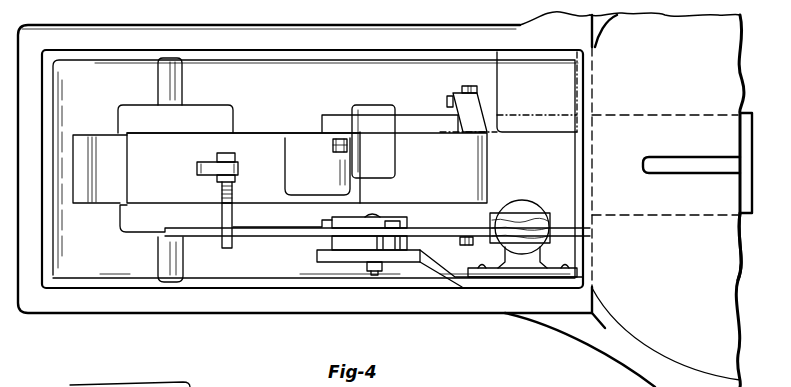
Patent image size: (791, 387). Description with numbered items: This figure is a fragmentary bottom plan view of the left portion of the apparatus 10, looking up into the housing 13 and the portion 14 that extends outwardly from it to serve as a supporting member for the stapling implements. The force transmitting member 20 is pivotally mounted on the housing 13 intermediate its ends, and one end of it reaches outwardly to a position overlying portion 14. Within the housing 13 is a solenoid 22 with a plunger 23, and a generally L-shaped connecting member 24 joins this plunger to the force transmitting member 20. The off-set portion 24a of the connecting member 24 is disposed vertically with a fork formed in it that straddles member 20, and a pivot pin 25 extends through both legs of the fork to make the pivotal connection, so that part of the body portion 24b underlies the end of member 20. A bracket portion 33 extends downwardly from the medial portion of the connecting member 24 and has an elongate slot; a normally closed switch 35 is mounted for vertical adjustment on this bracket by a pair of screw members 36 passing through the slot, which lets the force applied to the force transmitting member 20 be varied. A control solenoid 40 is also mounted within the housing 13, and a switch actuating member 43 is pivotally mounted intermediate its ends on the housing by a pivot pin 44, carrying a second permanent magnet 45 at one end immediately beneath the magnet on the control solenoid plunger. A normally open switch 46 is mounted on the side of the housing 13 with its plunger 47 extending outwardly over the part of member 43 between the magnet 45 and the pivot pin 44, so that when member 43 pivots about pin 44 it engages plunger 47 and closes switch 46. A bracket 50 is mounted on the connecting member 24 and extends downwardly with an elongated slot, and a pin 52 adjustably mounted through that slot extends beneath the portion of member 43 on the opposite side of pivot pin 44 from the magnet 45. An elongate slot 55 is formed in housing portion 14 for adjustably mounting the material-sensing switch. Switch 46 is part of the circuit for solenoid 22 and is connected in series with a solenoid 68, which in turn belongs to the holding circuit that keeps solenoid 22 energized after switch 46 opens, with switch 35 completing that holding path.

The apparatus 10 is at (143, 313).
The housing 13 is at (213, 262).
The portion 14 is at (708, 104).
The force transmitting member 20 is at (744, 214).
The solenoid 22 is at (143, 108).
The plunger 23 is at (113, 153).
The connecting member 24 is at (293, 133).
The off-set portion 24a is at (463, 107).
The body portion 24b is at (282, 137).
The pivot pin 25 is at (470, 95).
The bracket portion 33 is at (353, 190).
The switch 35 is at (393, 85).
The screw members 36 is at (332, 147).
The control solenoid 40 is at (523, 201).
The switch actuating member 43 is at (275, 233).
The pivot pin 44 is at (373, 272).
The permanent magnet 45 is at (555, 241).
The switch 46 is at (343, 246).
The plunger 47 is at (393, 250).
The bracket 50 is at (239, 170).
The pin 52 is at (221, 194).
The elongate slot 55 is at (712, 163).
The solenoid 68 is at (575, 80).